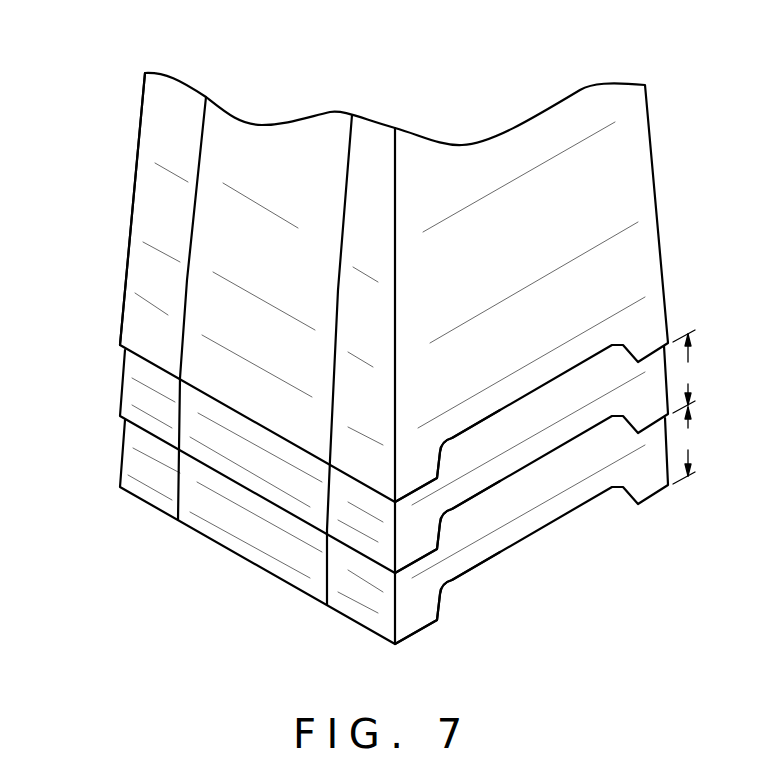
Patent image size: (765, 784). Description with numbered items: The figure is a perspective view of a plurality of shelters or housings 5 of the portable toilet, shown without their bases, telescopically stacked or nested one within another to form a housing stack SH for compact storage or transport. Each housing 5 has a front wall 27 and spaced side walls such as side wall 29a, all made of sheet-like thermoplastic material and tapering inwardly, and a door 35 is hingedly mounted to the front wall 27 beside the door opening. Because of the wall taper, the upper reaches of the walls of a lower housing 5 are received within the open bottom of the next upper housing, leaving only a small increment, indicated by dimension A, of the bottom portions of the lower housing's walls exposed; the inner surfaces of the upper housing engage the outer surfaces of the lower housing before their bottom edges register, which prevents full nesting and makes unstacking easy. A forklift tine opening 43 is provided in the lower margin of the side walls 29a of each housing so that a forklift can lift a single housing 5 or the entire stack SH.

The housing stack SH is at (480, 105).
The shelter or housing 5 is at (661, 132).
The front wall 27 is at (375, 183).
The door 35 is at (254, 168).
The side wall 29a is at (588, 214).
The forklift tine opening 43 is at (565, 391).
The dimension A is at (684, 407).